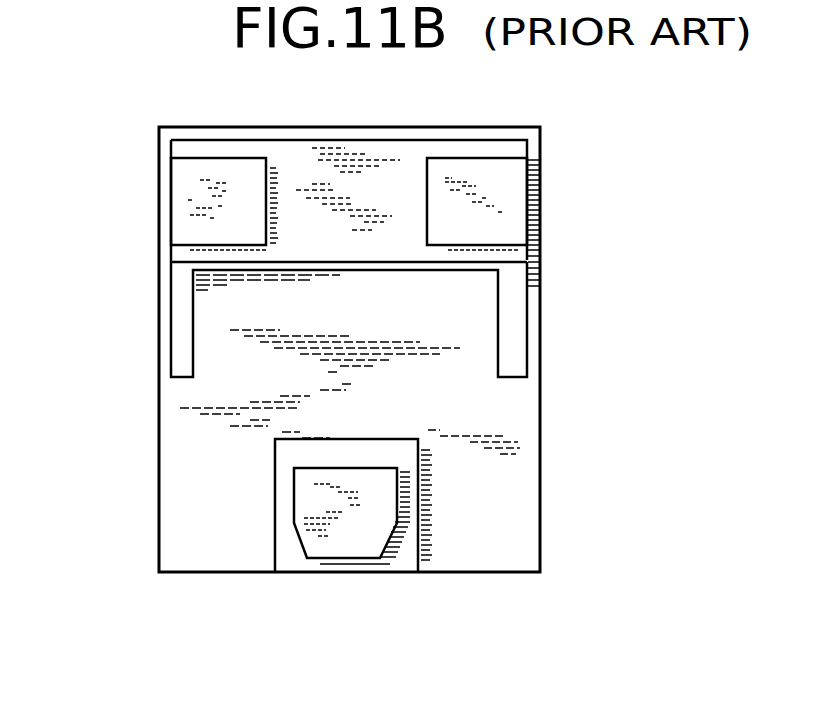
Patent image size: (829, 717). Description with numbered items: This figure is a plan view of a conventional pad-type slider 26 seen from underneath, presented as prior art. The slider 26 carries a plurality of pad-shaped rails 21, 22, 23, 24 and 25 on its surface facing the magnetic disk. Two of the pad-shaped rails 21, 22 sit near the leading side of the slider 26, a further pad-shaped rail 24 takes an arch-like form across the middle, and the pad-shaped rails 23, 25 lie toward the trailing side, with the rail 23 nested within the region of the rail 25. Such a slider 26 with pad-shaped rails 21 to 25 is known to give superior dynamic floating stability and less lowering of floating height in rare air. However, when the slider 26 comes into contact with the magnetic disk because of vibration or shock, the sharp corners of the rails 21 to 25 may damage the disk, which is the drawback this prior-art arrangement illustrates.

The pad-shaped rail 21 is at (510, 190).
The pad-shaped rail 22 is at (178, 200).
The pad-shaped rail 23 is at (355, 545).
The pad-shaped rail 24 is at (174, 336).
The pad-shaped rail 25 is at (284, 500).
The slider 26 is at (178, 577).